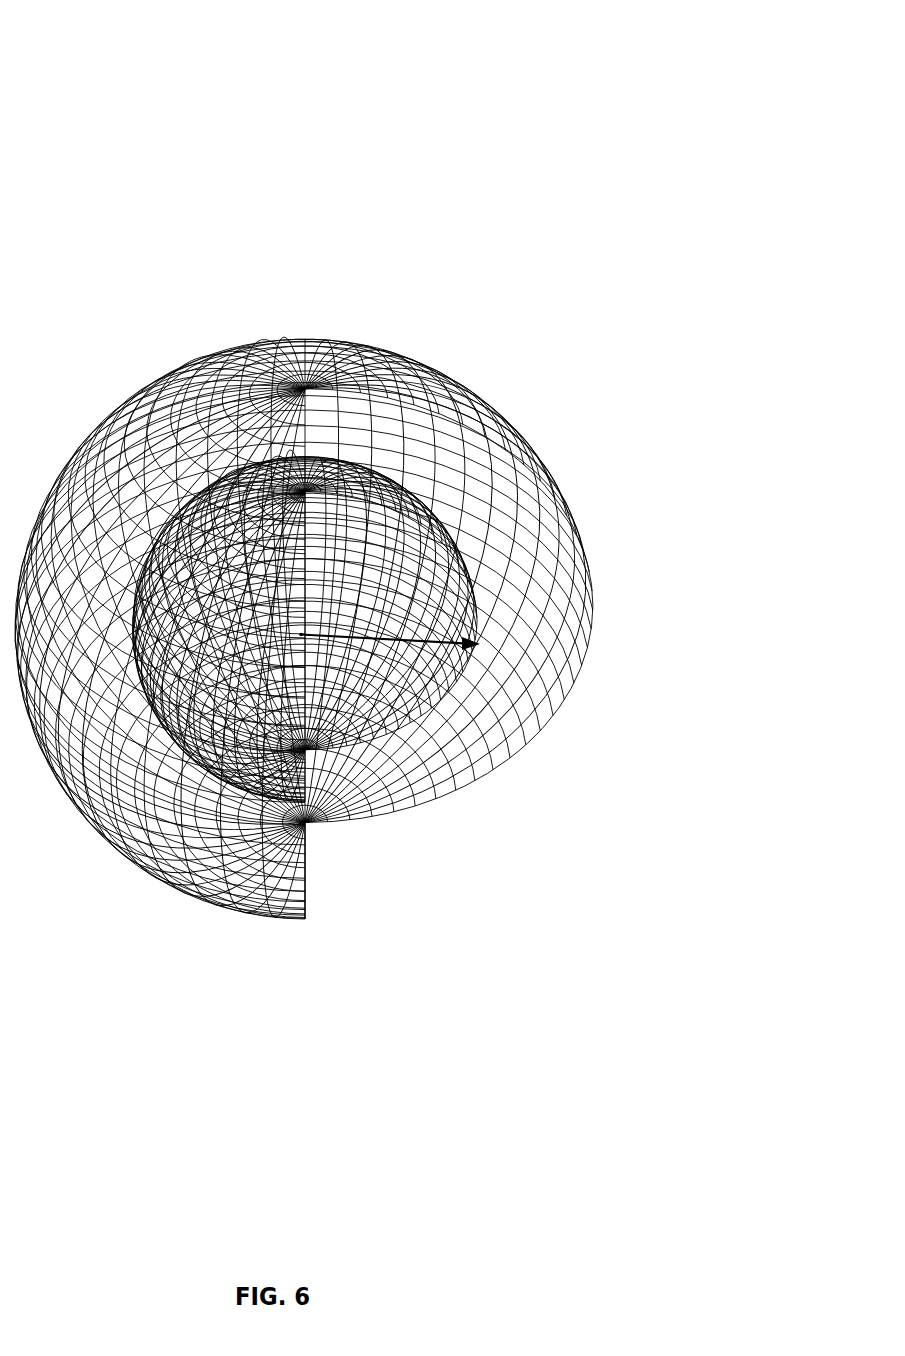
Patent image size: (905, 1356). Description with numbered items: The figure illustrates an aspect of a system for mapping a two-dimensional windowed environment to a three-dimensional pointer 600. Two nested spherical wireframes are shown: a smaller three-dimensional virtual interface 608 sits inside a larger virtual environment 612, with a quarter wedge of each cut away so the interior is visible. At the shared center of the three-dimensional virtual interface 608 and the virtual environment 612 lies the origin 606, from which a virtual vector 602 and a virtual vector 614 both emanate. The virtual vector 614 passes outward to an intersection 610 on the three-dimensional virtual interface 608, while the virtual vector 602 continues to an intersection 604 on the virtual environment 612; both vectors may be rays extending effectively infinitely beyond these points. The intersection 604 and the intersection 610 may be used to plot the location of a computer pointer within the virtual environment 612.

The 3D pointer 600 is at (664, 60).
The virtual vector 602 is at (415, 502).
The intersection 604 is at (490, 414).
The origin 606 is at (303, 637).
The three-dimensional virtual interface 608 is at (397, 741).
The intersection 610 is at (480, 646).
The virtual environment 612 is at (353, 829).
The virtual vector 614 is at (430, 643).